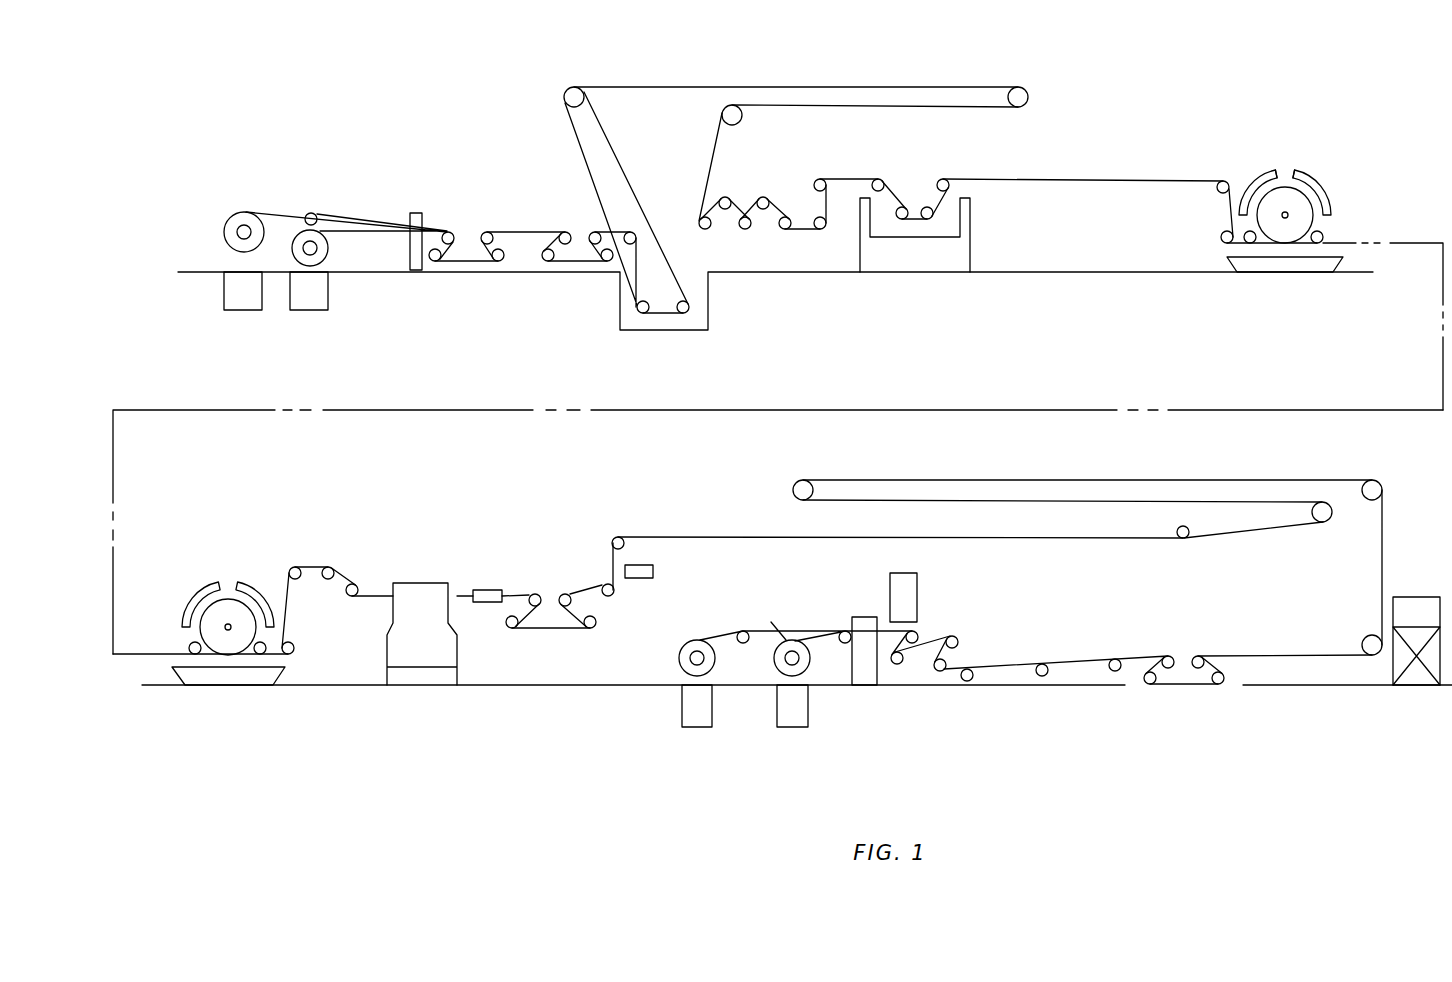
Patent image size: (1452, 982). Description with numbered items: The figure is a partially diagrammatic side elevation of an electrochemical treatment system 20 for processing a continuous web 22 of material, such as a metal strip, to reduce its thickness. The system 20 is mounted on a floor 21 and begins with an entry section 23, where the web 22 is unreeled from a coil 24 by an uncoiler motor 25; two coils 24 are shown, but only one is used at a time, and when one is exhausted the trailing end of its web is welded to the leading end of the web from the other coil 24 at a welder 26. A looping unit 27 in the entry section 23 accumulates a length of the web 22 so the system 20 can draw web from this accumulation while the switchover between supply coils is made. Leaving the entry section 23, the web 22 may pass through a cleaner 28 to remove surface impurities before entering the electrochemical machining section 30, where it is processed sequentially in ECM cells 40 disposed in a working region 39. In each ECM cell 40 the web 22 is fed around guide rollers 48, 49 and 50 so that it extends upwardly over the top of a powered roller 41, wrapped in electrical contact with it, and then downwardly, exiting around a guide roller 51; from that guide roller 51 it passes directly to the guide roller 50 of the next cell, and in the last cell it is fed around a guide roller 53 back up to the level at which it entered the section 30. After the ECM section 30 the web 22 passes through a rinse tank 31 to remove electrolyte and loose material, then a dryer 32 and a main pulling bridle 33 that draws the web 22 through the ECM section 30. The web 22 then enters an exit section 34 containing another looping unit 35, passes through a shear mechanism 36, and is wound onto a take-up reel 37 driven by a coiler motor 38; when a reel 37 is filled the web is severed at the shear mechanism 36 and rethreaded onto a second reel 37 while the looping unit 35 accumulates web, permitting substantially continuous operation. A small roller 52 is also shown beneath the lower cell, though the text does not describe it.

The electrochemical treatment system 20 is at (377, 76).
The floor 21 is at (178, 272).
The web 22 is at (511, 230).
The entry section 23 is at (548, 168).
The coil 24 is at (288, 233).
The uncoiler motor 25 is at (236, 228).
The welder 26 is at (422, 212).
The looping unit 27 is at (762, 82).
The cleaner 28 is at (910, 186).
The electrochemical machining section 30 is at (1358, 150).
The rinse tank 31 is at (408, 583).
The dryer 32 is at (490, 590).
The main pulling bridle 33 is at (572, 632).
The exit section 34 is at (1097, 602).
The looping unit 35 is at (1075, 470).
The shear mechanism 36 is at (863, 617).
The take-up reel 37 is at (693, 636).
The coiler motor 38 is at (688, 658).
The working region 39 is at (1285, 176).
The ECM cell 40 is at (1333, 191).
The roller 41 is at (1298, 217).
The guide roller 48 is at (1218, 191).
The guide roller 49 is at (1222, 240).
The guide roller 50 is at (1253, 244).
The guide roller 51 is at (1318, 244).
The roller 52 is at (292, 652).
The guide roller 53 is at (295, 566).